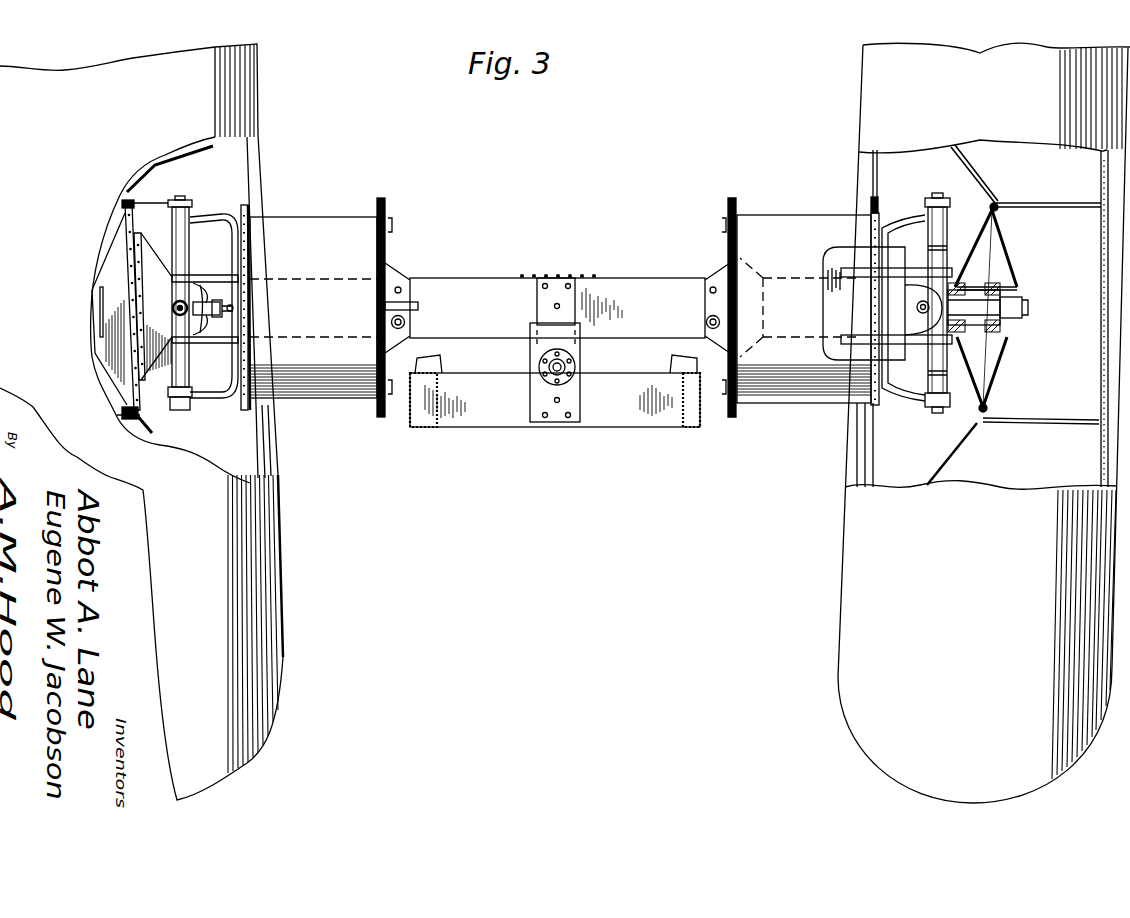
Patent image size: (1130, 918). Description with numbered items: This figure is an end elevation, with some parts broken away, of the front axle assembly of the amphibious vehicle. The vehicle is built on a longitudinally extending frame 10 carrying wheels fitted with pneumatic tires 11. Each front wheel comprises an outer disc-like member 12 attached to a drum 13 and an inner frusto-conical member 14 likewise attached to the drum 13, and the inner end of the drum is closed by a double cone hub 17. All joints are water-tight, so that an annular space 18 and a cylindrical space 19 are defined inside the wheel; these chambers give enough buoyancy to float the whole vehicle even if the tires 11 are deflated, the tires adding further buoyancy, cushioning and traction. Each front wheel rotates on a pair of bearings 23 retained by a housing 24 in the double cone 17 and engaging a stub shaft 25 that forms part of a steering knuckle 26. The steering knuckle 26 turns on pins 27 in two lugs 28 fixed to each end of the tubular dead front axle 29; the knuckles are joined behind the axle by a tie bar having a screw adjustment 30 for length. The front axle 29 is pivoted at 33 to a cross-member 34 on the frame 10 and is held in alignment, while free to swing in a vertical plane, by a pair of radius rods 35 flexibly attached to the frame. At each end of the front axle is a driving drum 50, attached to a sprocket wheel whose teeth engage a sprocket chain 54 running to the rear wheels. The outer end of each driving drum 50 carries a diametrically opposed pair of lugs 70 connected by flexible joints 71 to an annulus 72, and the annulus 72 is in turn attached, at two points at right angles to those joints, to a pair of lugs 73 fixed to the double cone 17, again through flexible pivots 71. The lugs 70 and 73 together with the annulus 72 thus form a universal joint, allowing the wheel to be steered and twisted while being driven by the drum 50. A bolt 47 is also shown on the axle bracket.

The frame 10 is at (700, 424).
The pneumatic tire 11 is at (846, 514).
The outer disc-like member 12 is at (1100, 160).
The drum 13 is at (1045, 203).
The inner frusto-conical member 14 is at (970, 167).
The double cone hub 17 is at (998, 250).
The annular space 18 is at (997, 167).
The cylindrical space 19 is at (1059, 406).
The bearings 23 is at (1005, 285).
The housing 24 is at (995, 340).
The stub shaft 25 is at (1010, 312).
The steering knuckle 26 is at (930, 323).
The pins 27 is at (933, 262).
The lugs 28 is at (903, 280).
The dead front axle 29 is at (648, 272).
The screw adjustment 30 is at (230, 294).
The pivot 33 is at (548, 368).
The cross-member 34 is at (597, 422).
The radius rods 35 is at (406, 322).
The bolt 47 is at (418, 306).
The driving drum 50 is at (310, 213).
The sprocket chain 54 is at (384, 200).
The lugs 70 is at (236, 216).
The flexible joints 71 is at (945, 213).
The annulus 72 is at (186, 245).
The lugs 73 is at (157, 307).